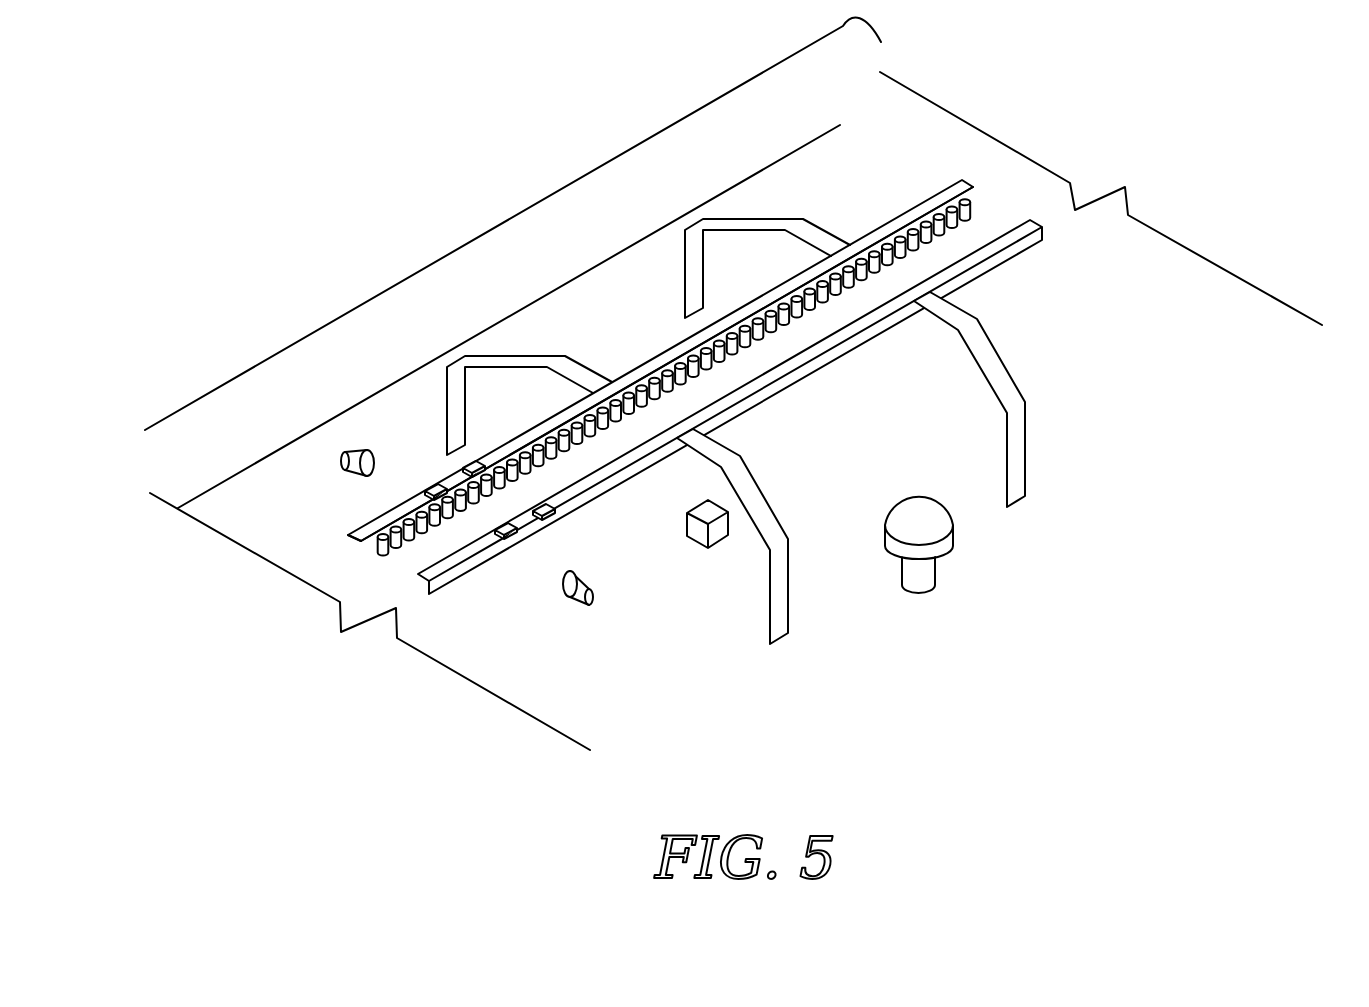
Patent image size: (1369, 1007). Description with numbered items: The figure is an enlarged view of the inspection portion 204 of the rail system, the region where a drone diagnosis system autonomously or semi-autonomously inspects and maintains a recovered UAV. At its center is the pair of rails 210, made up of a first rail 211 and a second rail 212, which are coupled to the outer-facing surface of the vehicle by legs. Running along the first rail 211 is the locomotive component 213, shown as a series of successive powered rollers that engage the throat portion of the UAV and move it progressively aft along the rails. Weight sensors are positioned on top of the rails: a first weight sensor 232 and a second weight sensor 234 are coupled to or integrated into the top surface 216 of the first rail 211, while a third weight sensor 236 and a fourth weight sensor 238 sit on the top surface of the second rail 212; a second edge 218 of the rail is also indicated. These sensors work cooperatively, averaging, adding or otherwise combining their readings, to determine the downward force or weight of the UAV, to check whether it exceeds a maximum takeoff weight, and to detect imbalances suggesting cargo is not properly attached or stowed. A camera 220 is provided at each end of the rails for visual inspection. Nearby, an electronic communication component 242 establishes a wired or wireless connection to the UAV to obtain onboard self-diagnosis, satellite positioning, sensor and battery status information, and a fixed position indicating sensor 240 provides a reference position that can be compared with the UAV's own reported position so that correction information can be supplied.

The inspection portion 204 is at (487, 232).
The pair of rails 210 is at (622, 439).
The first rail 211 is at (350, 550).
The second rail 212 is at (420, 594).
The locomotive component 213 is at (668, 378).
The top surface 216 is at (587, 393).
The rail lower edge 218 is at (368, 550).
The camera 220 is at (350, 452).
The first weight sensor 232 is at (435, 483).
The second weight sensor 234 is at (475, 459).
The third weight sensor 236 is at (506, 538).
The fourth weight sensor 238 is at (555, 514).
The fixed position indicating sensor 240 is at (923, 512).
The electronic communication component 242 is at (717, 528).